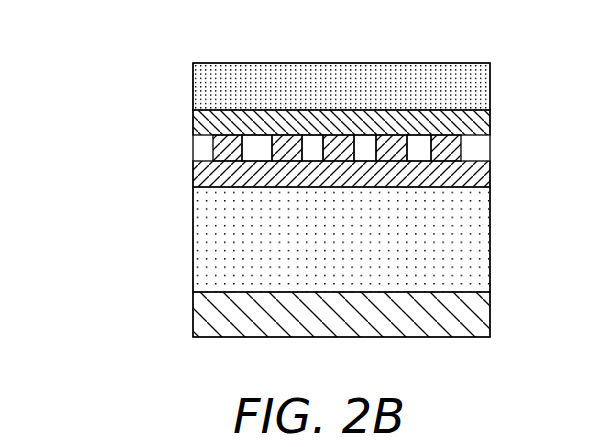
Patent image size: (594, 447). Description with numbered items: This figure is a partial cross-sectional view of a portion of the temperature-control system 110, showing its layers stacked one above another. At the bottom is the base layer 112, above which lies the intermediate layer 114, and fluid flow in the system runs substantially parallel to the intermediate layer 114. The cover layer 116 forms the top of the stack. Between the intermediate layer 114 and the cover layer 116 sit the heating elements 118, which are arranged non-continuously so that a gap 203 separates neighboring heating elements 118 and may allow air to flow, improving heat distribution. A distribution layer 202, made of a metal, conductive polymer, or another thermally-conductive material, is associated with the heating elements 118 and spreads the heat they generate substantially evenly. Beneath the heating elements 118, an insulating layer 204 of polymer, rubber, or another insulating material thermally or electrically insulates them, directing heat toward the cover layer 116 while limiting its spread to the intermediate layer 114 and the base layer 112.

The system 110 is at (464, 50).
The base layer 112 is at (202, 317).
The intermediate layer 114 is at (207, 223).
The cover layer 116 is at (194, 91).
The heating elements 118 is at (215, 147).
The distribution layer 202 is at (197, 121).
The gap 203 is at (261, 148).
The insulating layer 204 is at (197, 175).